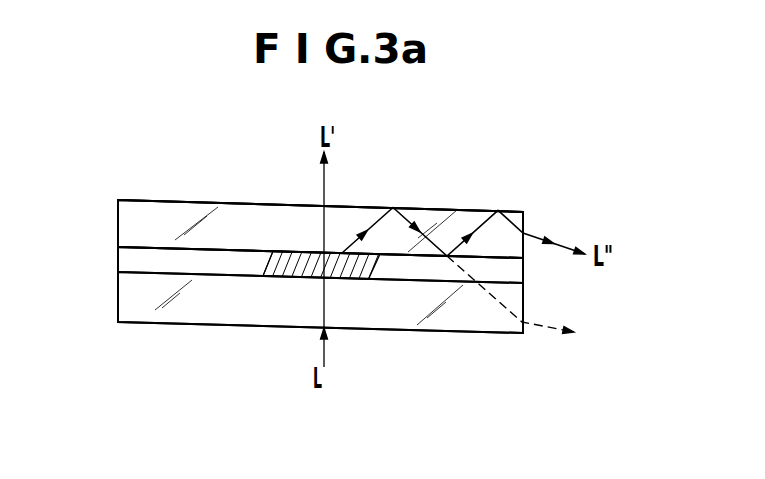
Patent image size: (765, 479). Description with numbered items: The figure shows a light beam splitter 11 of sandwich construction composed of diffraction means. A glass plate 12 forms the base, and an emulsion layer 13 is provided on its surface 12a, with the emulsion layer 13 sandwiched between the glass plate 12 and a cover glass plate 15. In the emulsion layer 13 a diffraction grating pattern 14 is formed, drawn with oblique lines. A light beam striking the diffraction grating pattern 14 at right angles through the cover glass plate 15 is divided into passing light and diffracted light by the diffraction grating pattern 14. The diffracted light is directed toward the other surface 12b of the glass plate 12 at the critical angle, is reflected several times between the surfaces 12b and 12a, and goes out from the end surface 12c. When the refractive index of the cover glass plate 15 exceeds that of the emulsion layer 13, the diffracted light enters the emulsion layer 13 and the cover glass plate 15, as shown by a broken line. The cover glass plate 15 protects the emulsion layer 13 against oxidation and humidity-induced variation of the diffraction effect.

The light beam splitter 11 is at (127, 196).
The glass plate 12 is at (175, 213).
The surface of the glass plate 12a is at (134, 249).
The other surface of the glass plate 12b is at (268, 204).
The end surface 12c is at (524, 252).
The emulsion layer 13 is at (210, 266).
The diffraction grating pattern 14 is at (357, 275).
The cover glass plate 15 is at (222, 311).